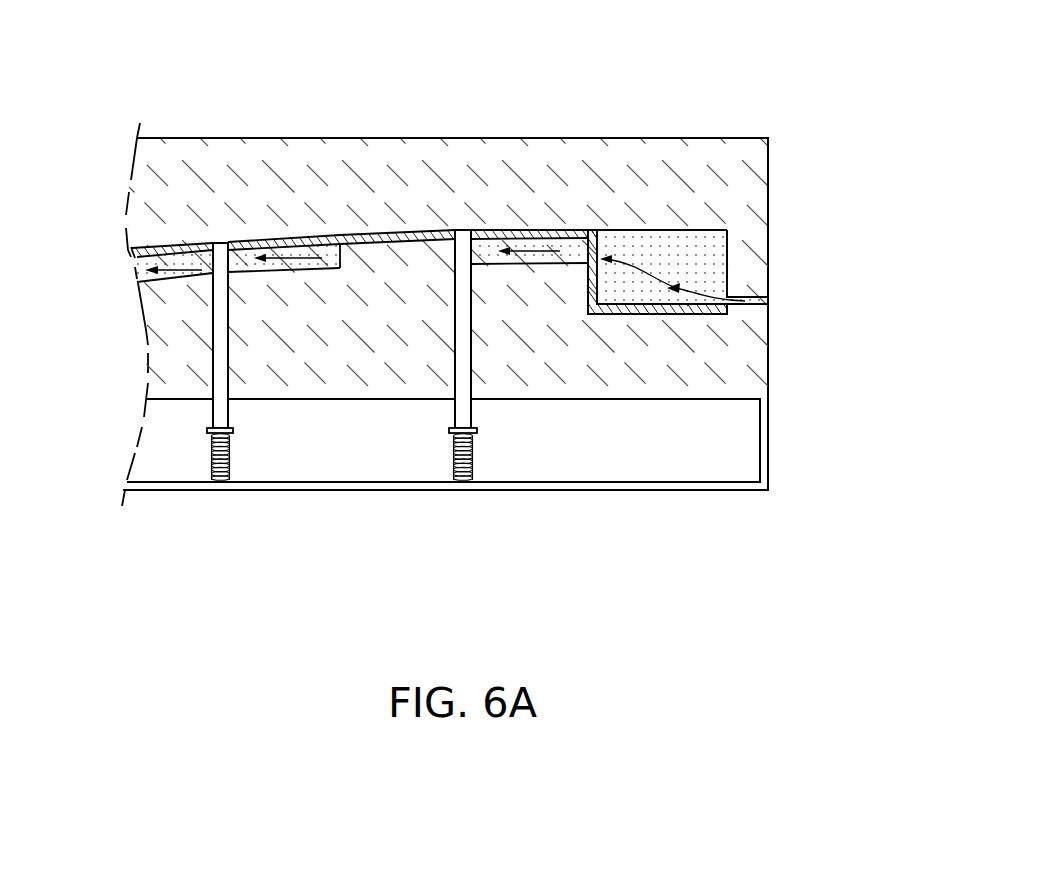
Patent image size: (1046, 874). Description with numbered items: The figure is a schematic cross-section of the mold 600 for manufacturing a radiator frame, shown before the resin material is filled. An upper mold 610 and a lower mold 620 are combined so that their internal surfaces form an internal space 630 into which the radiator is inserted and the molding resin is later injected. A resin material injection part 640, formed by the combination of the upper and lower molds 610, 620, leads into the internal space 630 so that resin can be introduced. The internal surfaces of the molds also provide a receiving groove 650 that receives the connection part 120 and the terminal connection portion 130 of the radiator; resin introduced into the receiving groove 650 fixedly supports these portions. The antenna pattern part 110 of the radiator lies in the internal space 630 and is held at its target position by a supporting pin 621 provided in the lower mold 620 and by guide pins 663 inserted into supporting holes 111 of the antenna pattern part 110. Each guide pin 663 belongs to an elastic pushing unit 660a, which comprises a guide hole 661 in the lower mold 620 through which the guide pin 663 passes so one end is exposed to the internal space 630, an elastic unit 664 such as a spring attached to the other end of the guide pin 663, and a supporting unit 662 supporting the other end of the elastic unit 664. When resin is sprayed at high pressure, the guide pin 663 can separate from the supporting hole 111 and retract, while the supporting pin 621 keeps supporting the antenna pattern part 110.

The mold for manufacturing the radiator frame 600 is at (752, 27).
The upper mold 610 is at (535, 160).
The lower mold 620 is at (757, 357).
The supporting pin 621 is at (350, 257).
The internal space 630 is at (170, 262).
The resin material injection part 640 is at (760, 300).
The receiving groove 650 is at (597, 290).
The antenna pattern part 110 is at (300, 243).
The supporting hole 111 is at (218, 242).
The connection part 120 is at (586, 274).
The terminal connection portion 130 is at (680, 314).
The elastic pushing unit 660a is at (450, 600).
The guide hole 661 is at (216, 322).
The supporting unit 662 is at (287, 484).
The guide pin 663 is at (214, 412).
The elastic unit 664 is at (212, 463).